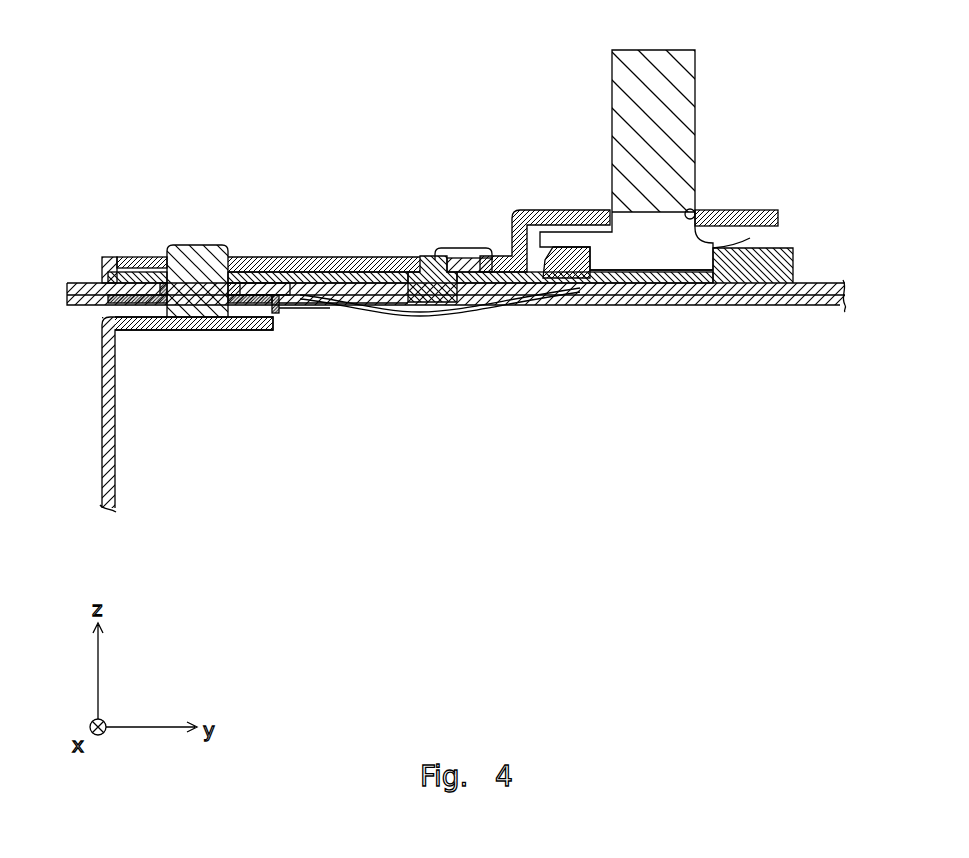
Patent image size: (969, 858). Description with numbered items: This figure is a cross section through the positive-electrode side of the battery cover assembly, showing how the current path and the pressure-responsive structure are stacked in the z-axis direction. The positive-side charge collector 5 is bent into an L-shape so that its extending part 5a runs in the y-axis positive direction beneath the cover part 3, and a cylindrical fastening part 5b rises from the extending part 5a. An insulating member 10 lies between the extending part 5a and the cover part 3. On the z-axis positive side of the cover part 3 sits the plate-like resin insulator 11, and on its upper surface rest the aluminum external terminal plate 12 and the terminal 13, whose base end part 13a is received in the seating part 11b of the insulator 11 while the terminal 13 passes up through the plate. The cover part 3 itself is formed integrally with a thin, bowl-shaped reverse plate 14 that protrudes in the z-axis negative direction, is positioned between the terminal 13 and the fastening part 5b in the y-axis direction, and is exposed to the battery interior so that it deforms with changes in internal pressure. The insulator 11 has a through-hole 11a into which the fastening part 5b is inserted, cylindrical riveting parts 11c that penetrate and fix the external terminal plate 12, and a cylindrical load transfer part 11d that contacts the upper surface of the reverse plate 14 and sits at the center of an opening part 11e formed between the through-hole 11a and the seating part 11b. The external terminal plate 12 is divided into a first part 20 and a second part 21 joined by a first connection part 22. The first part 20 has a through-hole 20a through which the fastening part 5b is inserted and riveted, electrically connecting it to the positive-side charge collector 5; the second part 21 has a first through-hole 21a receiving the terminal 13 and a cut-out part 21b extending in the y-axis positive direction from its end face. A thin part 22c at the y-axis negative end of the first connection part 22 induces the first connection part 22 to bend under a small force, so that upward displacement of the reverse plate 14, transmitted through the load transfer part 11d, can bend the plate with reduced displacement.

The cover part 3 is at (760, 306).
The positive-side charge collector 5 is at (120, 475).
The extending part 5a is at (186, 331).
The fastening part 5b is at (200, 255).
The insulating member 10 is at (277, 315).
The insulator 11 is at (795, 262).
The through-hole 11a is at (232, 303).
The seating part 11b is at (627, 290).
The riveting parts 11c is at (463, 250).
The load transfer part 11d is at (430, 305).
The opening part 11e is at (325, 300).
The external terminal plate 12 is at (316, 245).
The terminal 13 is at (705, 92).
The base end part 13a is at (672, 270).
The reverse plate 14 is at (468, 312).
The first part 20 is at (128, 250).
The through-hole 20a is at (168, 275).
The second part 21 is at (757, 205).
The first through-hole 21a is at (690, 207).
The cut-out part 21b is at (483, 248).
The first connection part 22 is at (380, 255).
The thin part 22c is at (276, 256).